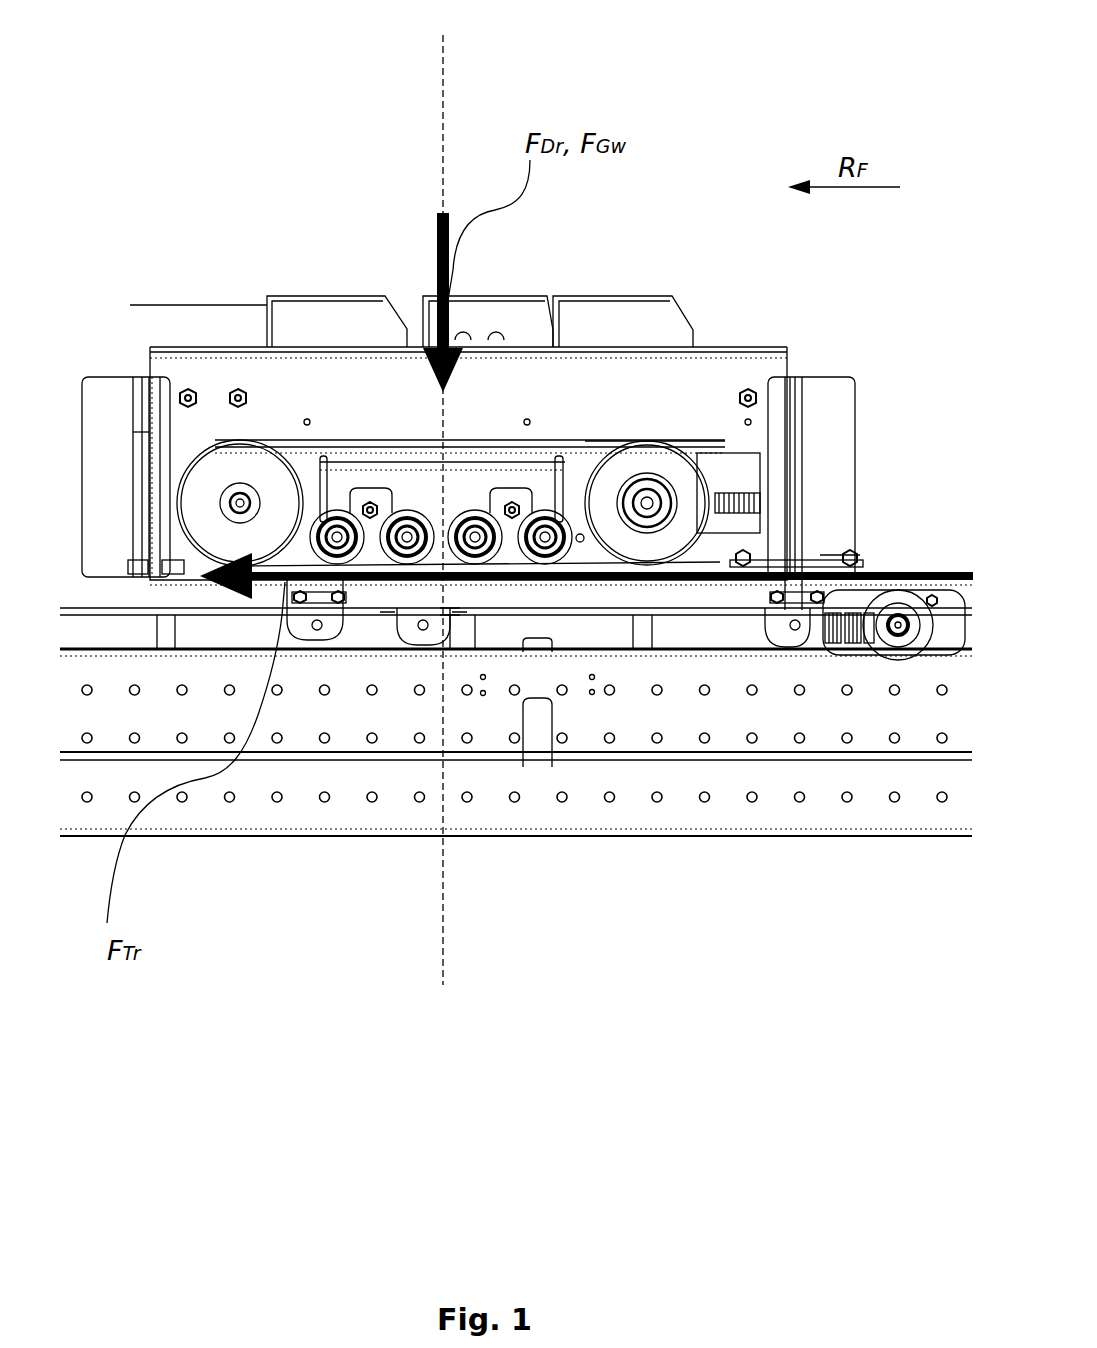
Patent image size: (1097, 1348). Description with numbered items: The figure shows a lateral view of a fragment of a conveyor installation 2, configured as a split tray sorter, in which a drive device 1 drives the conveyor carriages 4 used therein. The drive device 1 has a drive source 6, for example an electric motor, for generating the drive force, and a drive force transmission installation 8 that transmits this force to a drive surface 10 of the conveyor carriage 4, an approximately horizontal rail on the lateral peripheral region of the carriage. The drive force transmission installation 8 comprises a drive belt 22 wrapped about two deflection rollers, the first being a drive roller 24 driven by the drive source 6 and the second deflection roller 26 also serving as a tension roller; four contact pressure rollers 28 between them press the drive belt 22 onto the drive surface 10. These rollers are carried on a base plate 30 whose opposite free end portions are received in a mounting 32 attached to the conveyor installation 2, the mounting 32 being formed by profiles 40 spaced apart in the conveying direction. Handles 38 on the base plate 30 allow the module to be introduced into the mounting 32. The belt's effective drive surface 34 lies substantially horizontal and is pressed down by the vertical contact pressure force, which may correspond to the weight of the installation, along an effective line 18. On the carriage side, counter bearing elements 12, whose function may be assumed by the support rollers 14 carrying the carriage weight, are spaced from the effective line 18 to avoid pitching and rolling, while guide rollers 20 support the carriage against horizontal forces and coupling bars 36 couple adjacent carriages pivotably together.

The drive device 1 is at (230, 152).
The conveyor installation 2 is at (677, 890).
The conveyor carriage 4 is at (682, 635).
The drive source 6 is at (473, 302).
The drive force transmission installation 8 is at (195, 312).
The drive surface 10 is at (690, 557).
The counter bearing element 12 is at (406, 582).
The support roller 14 is at (423, 626).
The effective line 18 is at (447, 120).
The guide roller 20 is at (870, 612).
The drive belt 22 is at (580, 437).
The drive roller 24 is at (200, 428).
The deflection roller 26 is at (668, 443).
The contact pressure roller 28 is at (470, 578).
The base plate 30 is at (240, 337).
The mounting 32 is at (832, 348).
The effective drive surface 34 is at (470, 582).
The coupling bar 36 is at (825, 557).
The handle 38 is at (304, 303).
The profile 40 is at (678, 440).